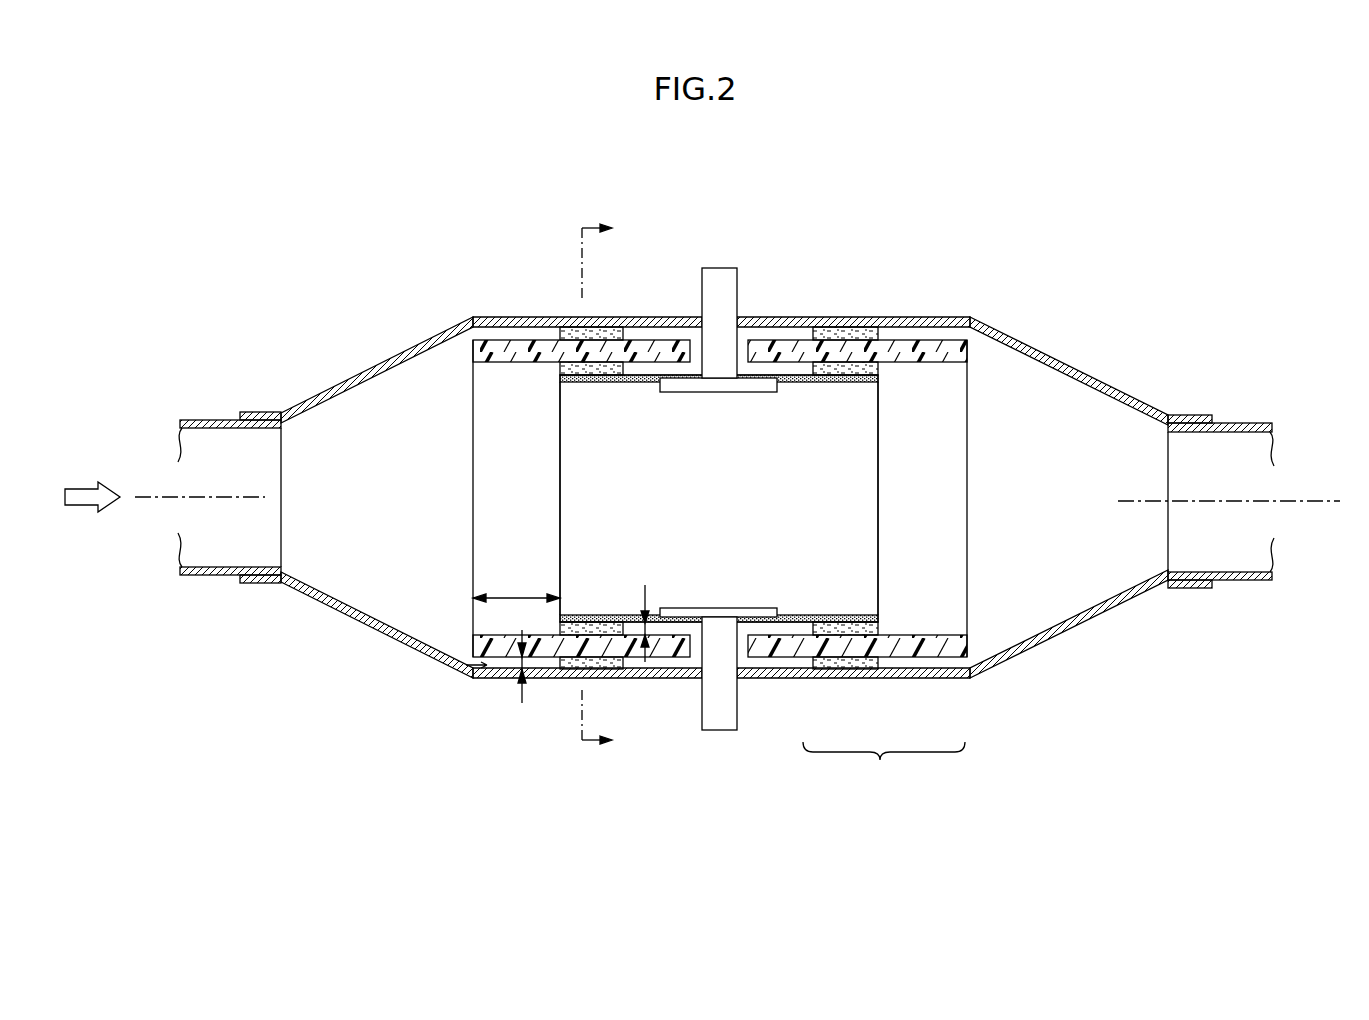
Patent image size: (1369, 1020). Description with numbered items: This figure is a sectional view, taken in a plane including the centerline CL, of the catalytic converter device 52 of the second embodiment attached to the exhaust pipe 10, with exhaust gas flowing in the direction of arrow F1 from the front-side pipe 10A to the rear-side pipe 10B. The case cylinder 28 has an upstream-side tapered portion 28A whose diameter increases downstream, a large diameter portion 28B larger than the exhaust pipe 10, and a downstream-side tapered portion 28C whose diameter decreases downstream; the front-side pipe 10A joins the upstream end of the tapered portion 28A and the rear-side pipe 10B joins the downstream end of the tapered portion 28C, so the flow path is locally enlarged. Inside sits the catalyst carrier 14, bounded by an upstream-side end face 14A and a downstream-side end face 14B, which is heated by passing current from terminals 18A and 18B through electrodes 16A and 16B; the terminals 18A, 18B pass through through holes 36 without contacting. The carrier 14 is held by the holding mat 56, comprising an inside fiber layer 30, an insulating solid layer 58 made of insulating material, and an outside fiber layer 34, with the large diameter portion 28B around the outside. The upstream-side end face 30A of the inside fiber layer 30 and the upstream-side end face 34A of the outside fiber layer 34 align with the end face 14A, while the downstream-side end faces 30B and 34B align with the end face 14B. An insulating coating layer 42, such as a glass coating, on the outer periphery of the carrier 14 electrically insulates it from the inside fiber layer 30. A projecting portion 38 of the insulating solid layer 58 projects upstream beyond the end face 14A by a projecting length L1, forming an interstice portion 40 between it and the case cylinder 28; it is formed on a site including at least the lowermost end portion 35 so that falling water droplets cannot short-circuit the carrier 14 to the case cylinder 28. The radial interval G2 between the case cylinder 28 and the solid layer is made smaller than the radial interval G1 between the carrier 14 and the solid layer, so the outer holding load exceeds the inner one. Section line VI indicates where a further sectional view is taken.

The exhaust pipe 10 is at (758, 468).
The front-side pipe 10A is at (215, 418).
The rear-side pipe 10B is at (1240, 422).
The catalyst carrier 14 is at (754, 498).
The upstream-side end face of the catalyst carrier 14A is at (560, 489).
The downstream-side end face of the catalyst carrier 14B is at (880, 557).
The electrode 16A is at (716, 393).
The electrode 16B is at (745, 606).
The terminal 18A is at (738, 288).
The terminal 18B is at (701, 712).
The case cylinder 28 is at (728, 473).
The upstream-side tapered portion 28A is at (385, 360).
The large diameter portion 28B is at (776, 318).
The downstream-side tapered portion 28C is at (1040, 352).
The inside fiber layer 30 is at (720, 543).
The upstream-side end face of the inside fiber layer 30A is at (565, 362).
The downstream-side end face of the inside fiber layer 30B is at (882, 364).
The outside fiber layer 34 is at (716, 508).
The upstream-side end face of the outside fiber layer 34A is at (556, 330).
The downstream-side end face of the outside fiber layer 34B is at (882, 330).
The lowermost end portion 35 is at (553, 676).
The through holes 36 is at (643, 330).
The projecting portion 38 is at (471, 645).
The interstice portion 40 is at (459, 673).
The insulating coating layer 42 is at (640, 384).
The catalytic converter device 52 is at (870, 205).
The holding mat 56 is at (884, 768).
The insulating solid layer 58 is at (857, 652).
The projecting length L1 is at (512, 592).
The interval G1 is at (641, 623).
The interval G2 is at (520, 666).
The exhaust gas flow direction arrow F1 is at (84, 489).
The centerline CL is at (1290, 501).
The section line VI- VI is at (611, 490).